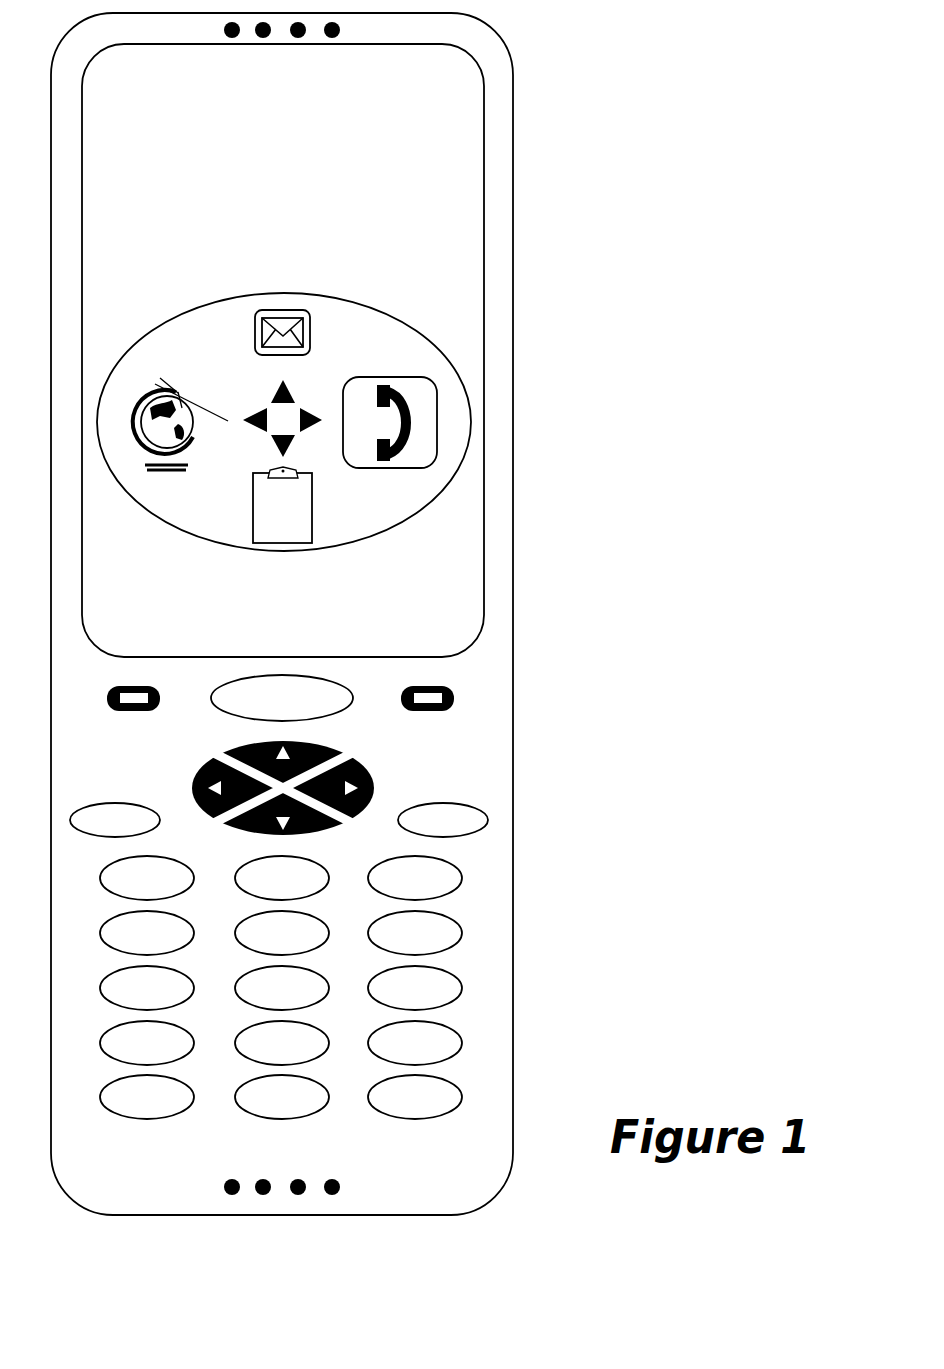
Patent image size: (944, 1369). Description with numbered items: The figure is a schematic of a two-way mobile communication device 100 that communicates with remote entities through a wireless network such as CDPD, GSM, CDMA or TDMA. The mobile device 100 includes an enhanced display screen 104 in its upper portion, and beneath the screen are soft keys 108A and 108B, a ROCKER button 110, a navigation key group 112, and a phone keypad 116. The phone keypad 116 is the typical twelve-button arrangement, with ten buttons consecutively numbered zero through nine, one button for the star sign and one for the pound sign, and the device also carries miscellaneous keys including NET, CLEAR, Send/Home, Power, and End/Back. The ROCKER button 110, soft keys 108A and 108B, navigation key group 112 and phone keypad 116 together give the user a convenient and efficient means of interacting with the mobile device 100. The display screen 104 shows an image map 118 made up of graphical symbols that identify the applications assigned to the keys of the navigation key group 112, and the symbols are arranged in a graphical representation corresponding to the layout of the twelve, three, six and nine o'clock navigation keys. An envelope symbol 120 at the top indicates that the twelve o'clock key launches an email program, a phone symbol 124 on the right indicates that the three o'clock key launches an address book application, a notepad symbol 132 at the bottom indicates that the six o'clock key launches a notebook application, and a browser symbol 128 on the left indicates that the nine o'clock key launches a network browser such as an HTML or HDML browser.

The two-way mobile communication device 100 is at (513, 152).
The display screen 104 is at (484, 238).
The soft key 108A is at (120, 713).
The soft key 108B is at (450, 691).
The ROCKER button 110 is at (280, 688).
The navigation key group 112 is at (414, 769).
The phone keypad 116 is at (495, 945).
The image map 118 is at (263, 293).
The envelope symbol 120 is at (297, 308).
The phone symbol 124 is at (413, 377).
The browser symbol 128 is at (157, 387).
The notepad symbol 132 is at (313, 515).